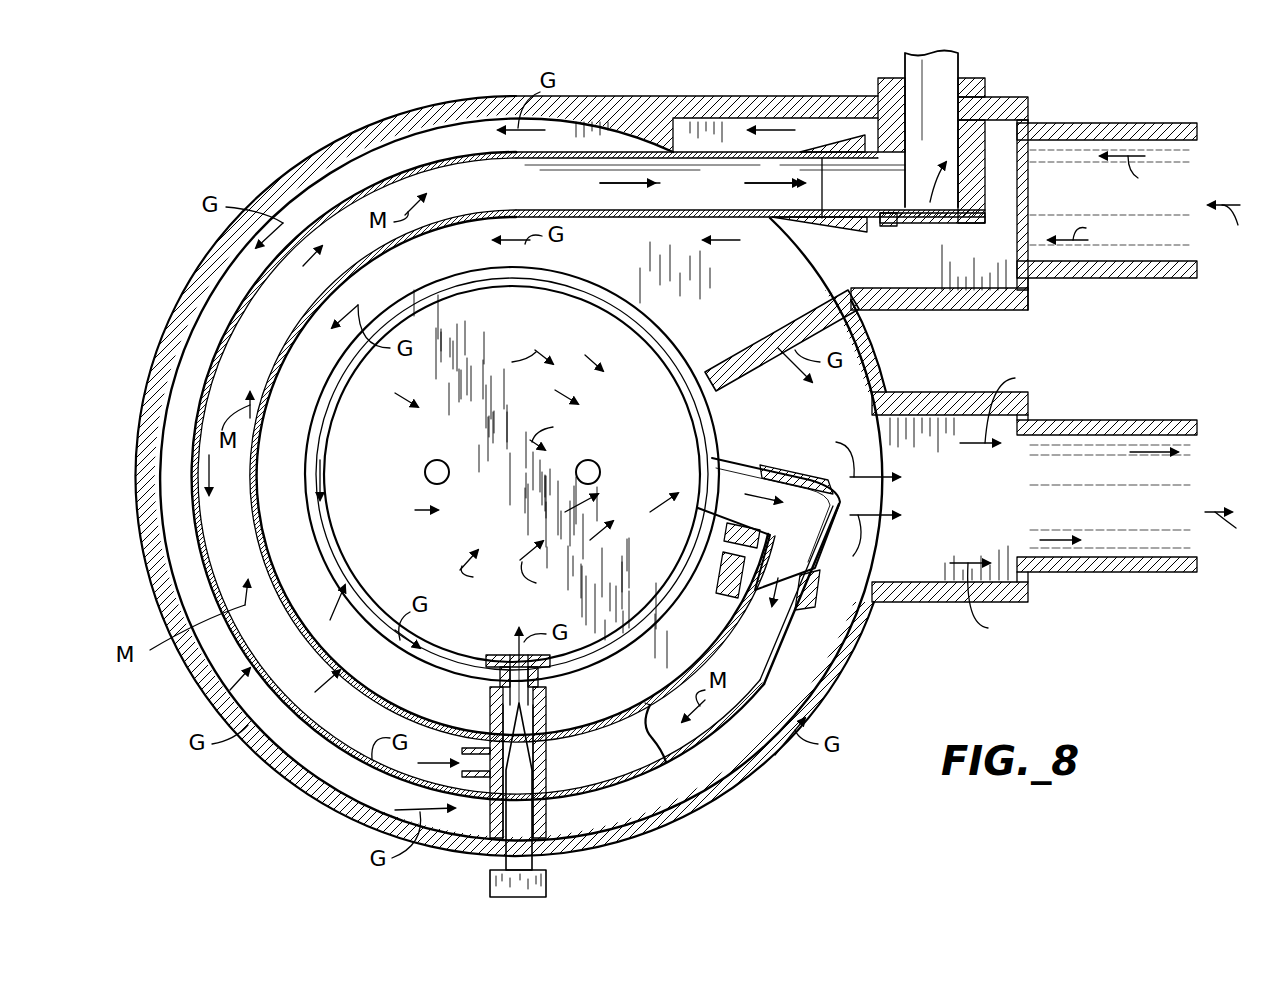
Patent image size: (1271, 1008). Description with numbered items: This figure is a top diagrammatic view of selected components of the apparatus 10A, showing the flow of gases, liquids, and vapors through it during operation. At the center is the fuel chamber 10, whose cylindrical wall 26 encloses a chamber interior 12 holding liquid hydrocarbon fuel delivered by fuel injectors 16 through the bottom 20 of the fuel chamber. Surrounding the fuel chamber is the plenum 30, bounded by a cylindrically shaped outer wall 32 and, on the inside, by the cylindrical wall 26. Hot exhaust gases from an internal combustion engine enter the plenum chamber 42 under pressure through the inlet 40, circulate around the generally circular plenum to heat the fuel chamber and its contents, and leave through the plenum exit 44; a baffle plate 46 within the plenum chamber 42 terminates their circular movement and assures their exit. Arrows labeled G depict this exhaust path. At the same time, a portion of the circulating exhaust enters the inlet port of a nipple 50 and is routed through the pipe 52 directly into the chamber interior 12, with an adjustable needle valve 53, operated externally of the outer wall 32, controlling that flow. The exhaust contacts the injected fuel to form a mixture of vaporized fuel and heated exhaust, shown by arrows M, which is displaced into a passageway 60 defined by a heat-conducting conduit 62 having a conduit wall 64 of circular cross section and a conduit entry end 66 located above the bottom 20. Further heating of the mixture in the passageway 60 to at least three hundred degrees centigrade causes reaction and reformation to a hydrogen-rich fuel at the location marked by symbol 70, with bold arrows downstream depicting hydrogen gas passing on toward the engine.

The apparatus 10A is at (333, 135).
The fuel chamber 10 is at (560, 290).
The chamber interior 12 is at (445, 658).
The fuel injectors 16 is at (434, 460).
The bottom 20 is at (522, 479).
The cylindrical wall 26 is at (488, 283).
The plenum 30 is at (828, 646).
The outer wall 32 is at (828, 698).
The inlet 40 is at (1092, 265).
The plenum chamber 42 is at (185, 362).
The plenum exit 44 is at (1092, 557).
The baffle plate 46 is at (805, 320).
The nipple 50 is at (458, 770).
The pipe 52 is at (522, 812).
The adjustable needle valve 53 is at (550, 884).
The passageway 60 is at (690, 210).
The conduit 62 is at (773, 462).
The conduit wall 64 is at (668, 756).
The conduit entry end 66 is at (762, 490).
The symbol 70 is at (640, 190).